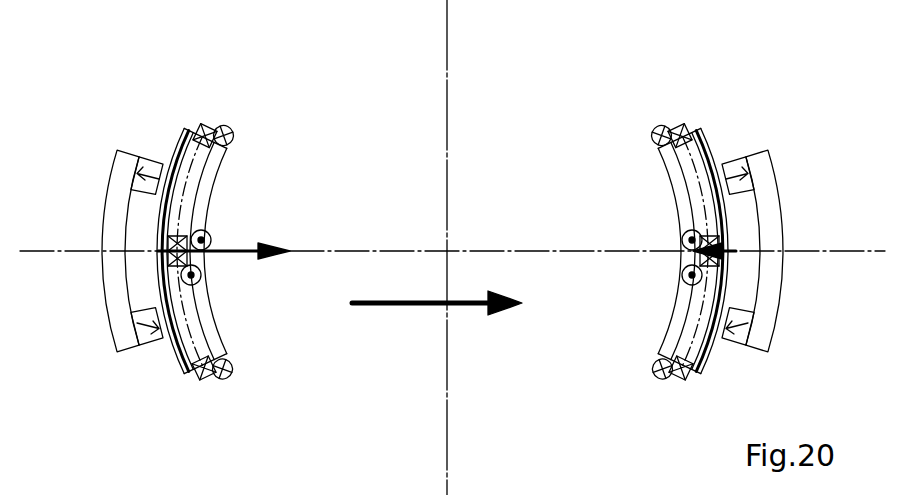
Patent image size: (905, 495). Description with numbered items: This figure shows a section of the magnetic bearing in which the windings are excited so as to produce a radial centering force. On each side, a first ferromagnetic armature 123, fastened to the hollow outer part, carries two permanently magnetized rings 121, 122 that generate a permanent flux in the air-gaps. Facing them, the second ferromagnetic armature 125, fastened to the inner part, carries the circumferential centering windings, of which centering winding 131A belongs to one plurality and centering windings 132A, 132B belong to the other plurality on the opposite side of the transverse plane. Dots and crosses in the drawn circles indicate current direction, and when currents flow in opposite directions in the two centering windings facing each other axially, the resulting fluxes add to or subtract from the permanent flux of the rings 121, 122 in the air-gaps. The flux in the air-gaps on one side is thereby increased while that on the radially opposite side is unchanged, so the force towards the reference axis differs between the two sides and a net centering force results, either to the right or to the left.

The permanently magnetized ring 121 is at (146, 160).
The permanently magnetized ring 122 is at (152, 346).
The first ferromagnetic armature 123 is at (124, 352).
The second ferromagnetic armature 125 is at (214, 196).
The circumferential centering winding 131A is at (208, 124).
The circumferential centering winding 132A is at (208, 380).
The circumferential centering winding 132B is at (684, 380).